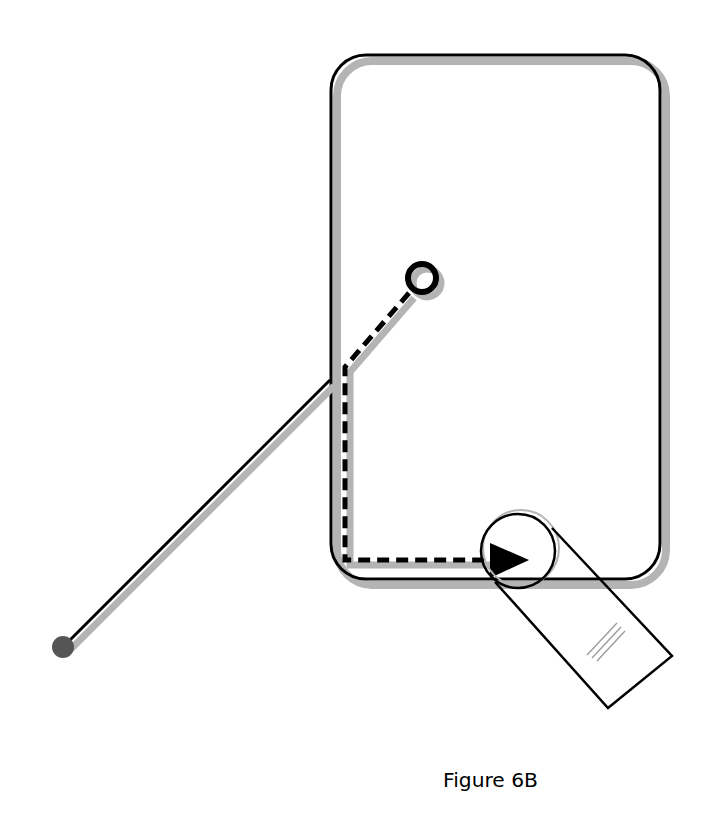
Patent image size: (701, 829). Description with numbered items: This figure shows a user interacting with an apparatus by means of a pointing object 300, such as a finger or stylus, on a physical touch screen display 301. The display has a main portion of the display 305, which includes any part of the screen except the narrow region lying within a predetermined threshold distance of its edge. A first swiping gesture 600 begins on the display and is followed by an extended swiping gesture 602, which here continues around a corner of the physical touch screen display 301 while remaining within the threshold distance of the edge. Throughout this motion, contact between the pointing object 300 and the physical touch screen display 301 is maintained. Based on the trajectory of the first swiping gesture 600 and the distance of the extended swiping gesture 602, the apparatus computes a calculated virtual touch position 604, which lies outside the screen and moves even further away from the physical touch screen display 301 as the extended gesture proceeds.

The physical touch screen display 301 is at (498, 299).
The main portion of the display 305 is at (542, 250).
The pointing object 300 is at (576, 609).
The first swiping gesture 600 is at (427, 329).
The extended swiping gesture 602 is at (439, 435).
The calculated virtual touch position 604 is at (193, 551).